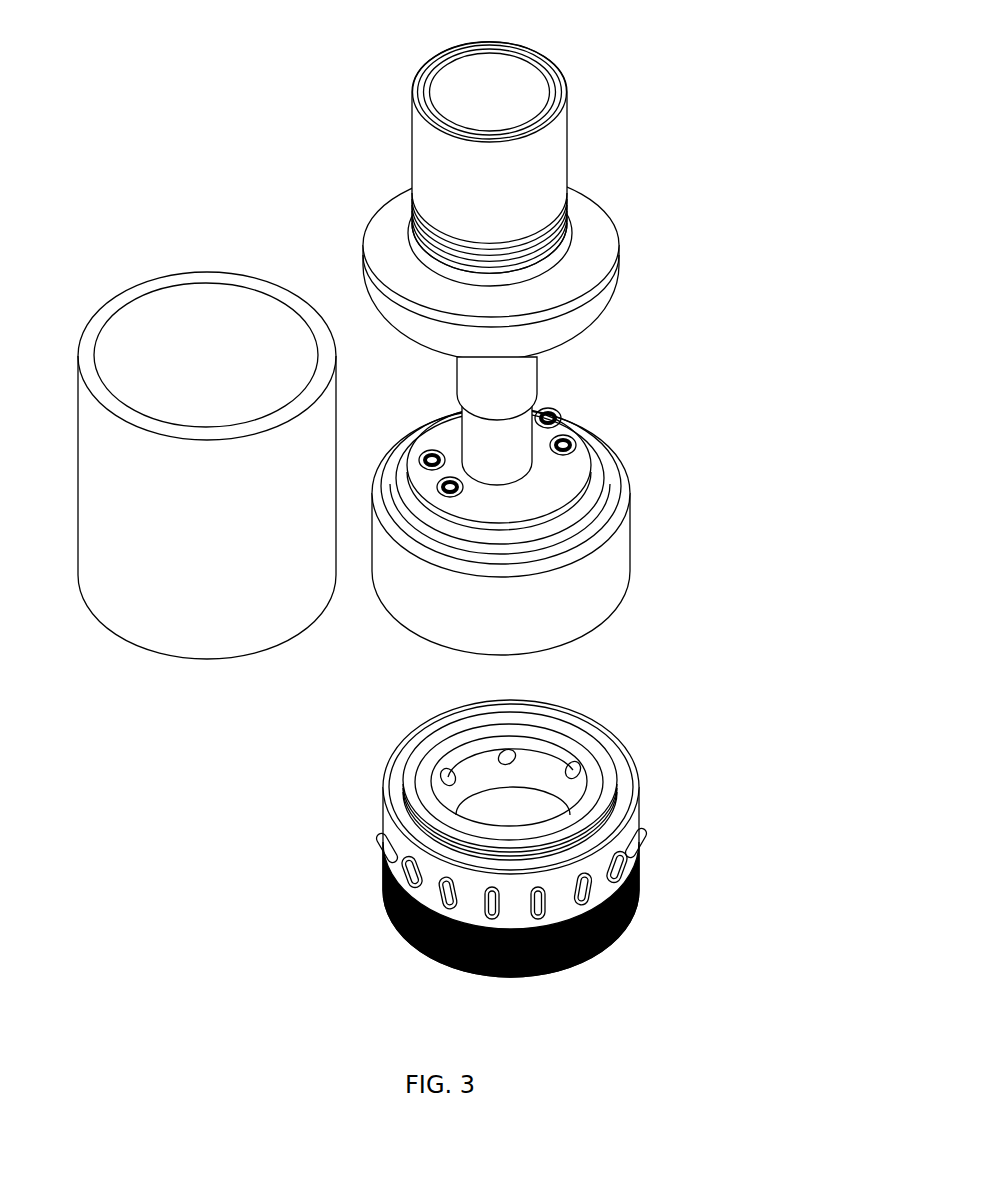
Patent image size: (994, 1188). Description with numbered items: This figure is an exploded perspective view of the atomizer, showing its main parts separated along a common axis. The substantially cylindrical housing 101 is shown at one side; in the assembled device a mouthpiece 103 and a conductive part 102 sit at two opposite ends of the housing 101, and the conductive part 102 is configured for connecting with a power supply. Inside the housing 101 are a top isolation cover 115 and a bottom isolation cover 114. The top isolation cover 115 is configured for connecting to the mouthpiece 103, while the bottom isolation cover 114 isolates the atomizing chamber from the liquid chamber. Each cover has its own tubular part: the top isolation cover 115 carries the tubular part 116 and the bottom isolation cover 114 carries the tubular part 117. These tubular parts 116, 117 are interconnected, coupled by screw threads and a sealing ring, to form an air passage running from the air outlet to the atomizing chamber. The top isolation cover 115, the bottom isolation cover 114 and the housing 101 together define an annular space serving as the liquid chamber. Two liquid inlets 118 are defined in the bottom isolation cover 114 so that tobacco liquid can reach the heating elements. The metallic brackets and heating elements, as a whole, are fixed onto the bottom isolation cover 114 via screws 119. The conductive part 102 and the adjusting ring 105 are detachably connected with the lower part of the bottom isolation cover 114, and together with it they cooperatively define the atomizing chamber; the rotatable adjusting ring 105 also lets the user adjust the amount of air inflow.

The housing 101 is at (203, 280).
The conductive part 102 is at (643, 893).
The mouthpiece 103 is at (527, 173).
The adjusting ring 105 is at (637, 768).
The bottom isolation cover 114 is at (617, 477).
The top isolation cover 115 is at (590, 310).
The tubular part 116 is at (480, 387).
The tubular part 117 is at (512, 460).
The liquid inlet 118 is at (560, 430).
The screws 119 is at (447, 493).